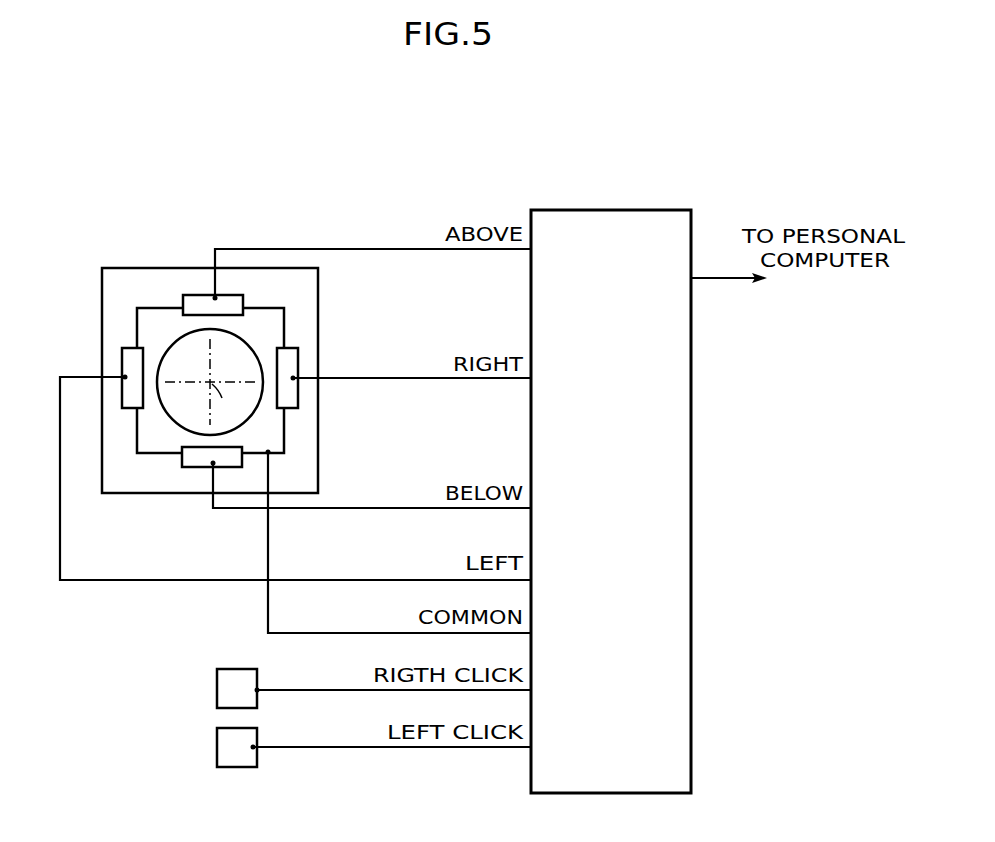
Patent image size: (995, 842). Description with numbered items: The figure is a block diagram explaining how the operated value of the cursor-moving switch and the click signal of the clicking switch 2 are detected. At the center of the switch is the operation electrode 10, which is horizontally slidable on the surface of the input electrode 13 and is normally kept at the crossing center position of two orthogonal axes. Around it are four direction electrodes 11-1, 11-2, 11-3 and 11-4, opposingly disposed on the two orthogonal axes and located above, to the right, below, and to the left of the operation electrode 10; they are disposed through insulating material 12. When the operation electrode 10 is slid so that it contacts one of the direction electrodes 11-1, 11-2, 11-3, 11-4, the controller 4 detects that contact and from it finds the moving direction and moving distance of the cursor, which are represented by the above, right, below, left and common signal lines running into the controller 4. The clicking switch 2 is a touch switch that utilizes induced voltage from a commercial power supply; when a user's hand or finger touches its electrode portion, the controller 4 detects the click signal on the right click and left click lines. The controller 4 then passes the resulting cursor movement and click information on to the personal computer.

The clicking switch 2 is at (217, 697).
The controller 4 is at (639, 210).
The operation electrode 10 is at (240, 362).
The direction electrode 11-1 is at (200, 297).
The direction electrode 11-2 is at (294, 397).
The direction electrode 11-3 is at (193, 467).
The direction electrode 11-4 is at (122, 363).
The insulating material 12 is at (109, 300).
The input electrode 13 is at (147, 314).